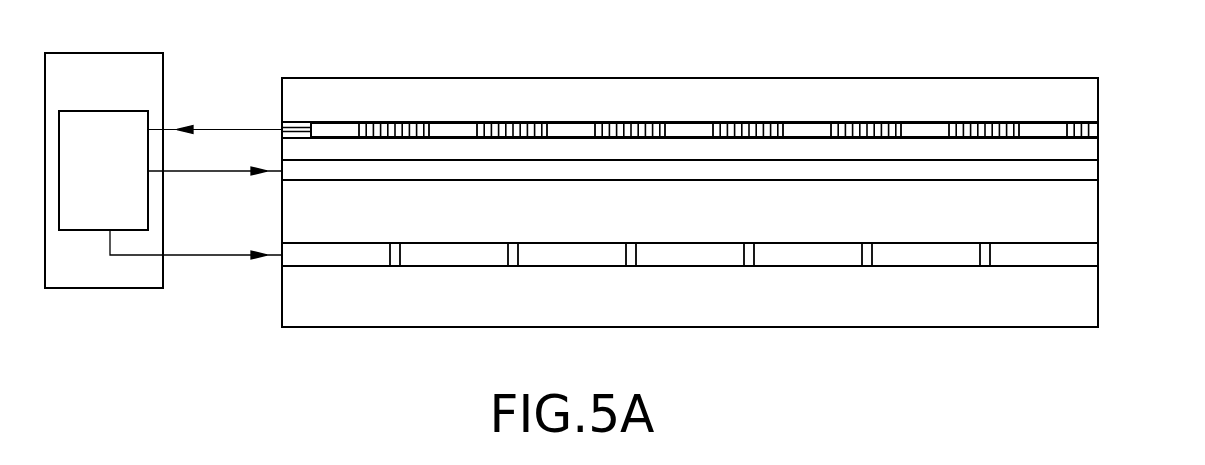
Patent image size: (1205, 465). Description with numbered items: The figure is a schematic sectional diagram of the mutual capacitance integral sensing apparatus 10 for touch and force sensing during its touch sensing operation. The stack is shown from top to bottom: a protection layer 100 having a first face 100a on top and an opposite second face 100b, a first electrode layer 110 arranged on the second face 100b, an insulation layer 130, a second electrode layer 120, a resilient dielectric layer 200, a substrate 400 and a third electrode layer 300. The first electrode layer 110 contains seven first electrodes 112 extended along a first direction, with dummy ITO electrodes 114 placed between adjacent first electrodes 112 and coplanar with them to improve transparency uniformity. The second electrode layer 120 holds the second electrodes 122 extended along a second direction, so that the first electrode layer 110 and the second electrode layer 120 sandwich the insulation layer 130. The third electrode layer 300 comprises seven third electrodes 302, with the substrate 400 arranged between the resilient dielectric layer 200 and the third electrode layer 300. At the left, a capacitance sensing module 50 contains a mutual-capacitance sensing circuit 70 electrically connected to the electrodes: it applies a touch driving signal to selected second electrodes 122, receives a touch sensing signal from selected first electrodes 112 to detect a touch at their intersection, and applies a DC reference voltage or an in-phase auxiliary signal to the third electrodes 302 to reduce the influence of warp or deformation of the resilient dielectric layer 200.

The integral sensing apparatus 10 is at (584, 30).
The capacitance sensing module 50 is at (104, 170).
The mutual-capacitance sensing circuit 70 is at (170, 181).
The protection layer 100 is at (1100, 92).
The first face 100a is at (1068, 78).
The second face 100b is at (1003, 130).
The first electrode layer 110 is at (1090, 130).
The first electrodes 112 is at (924, 130).
The dummy ITO electrodes 114 is at (852, 130).
The second electrode layer 120 is at (1100, 170).
The second electrodes 122 is at (880, 170).
The insulation layer 130 is at (1100, 147).
The resilient dielectric layer 200 is at (1100, 210).
The third electrode layer 300 is at (1100, 255).
The third electrode 302 is at (960, 259).
The substrate 400 is at (1100, 297).